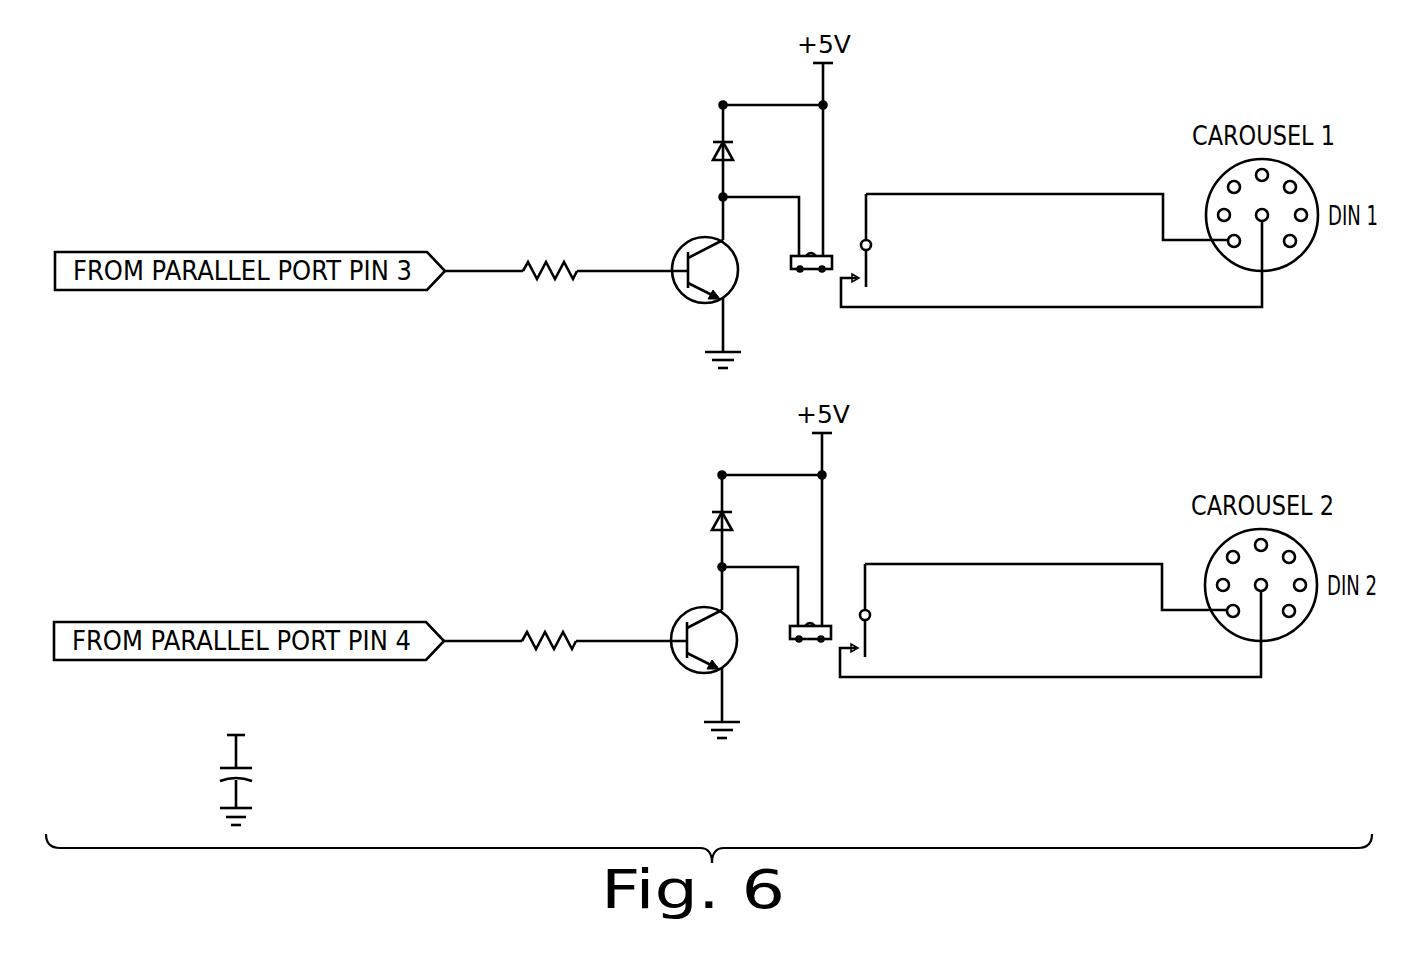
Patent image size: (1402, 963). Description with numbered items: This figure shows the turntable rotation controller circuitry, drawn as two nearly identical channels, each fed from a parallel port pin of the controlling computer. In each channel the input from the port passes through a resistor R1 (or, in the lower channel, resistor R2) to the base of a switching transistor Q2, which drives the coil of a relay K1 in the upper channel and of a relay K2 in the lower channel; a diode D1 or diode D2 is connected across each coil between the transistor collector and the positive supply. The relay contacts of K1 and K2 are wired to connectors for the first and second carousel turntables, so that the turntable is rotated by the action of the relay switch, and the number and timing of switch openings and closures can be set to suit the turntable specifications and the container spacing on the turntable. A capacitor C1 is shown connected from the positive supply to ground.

The 68K base resistor (channel 1) R1 is at (550, 275).
The 68K base resistor (channel 2) R2 is at (549, 645).
The 2N3904 NPN switching transistor Q2 is at (677, 474).
The 1N914 flyback diode (channel 1) D1 is at (680, 151).
The 1N914 flyback diode (channel 2) D2 is at (679, 521).
The SPST relay 1C12AH with 1K coil (carousel 1) K1 is at (1009, 250).
The SPST relay 1C12AH with 1K coil (carousel 2) K2 is at (1008, 620).
The 10 microfarad supply decoupling capacitor C1 is at (266, 763).